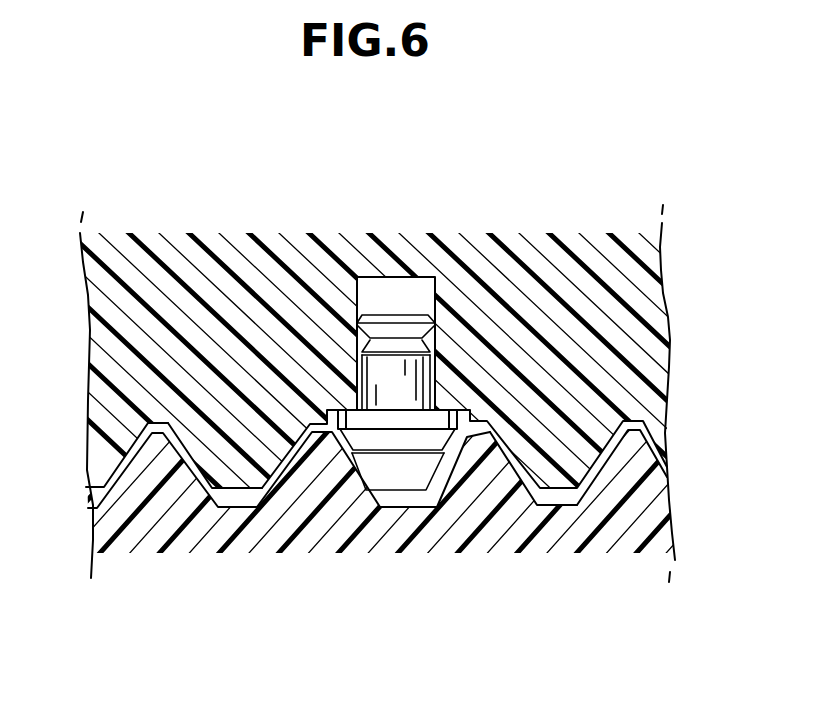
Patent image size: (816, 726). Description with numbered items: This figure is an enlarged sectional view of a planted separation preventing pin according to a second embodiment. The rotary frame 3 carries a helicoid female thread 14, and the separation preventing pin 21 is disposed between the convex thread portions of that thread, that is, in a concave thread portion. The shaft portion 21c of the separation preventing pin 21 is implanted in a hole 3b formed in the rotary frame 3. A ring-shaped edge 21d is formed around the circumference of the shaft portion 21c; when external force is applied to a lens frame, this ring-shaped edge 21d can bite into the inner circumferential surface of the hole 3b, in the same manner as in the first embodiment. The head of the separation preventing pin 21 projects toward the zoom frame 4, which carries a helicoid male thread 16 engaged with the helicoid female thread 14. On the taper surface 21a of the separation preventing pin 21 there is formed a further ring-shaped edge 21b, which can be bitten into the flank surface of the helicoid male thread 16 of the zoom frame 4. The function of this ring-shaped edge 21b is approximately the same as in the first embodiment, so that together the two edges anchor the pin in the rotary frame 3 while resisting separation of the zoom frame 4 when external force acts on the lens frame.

The rotary frame 3 is at (242, 251).
The hole 3b is at (358, 303).
The zoom frame 4 is at (196, 536).
The helicoid female thread 14 is at (232, 467).
The helicoid male thread 16 is at (507, 503).
The separation preventing pin 21 is at (368, 391).
The taper surface 21a is at (427, 468).
The ring-shaped edge 21b is at (383, 453).
The shaft portion 21c is at (430, 386).
The ring-shaped edge 21d is at (417, 323).